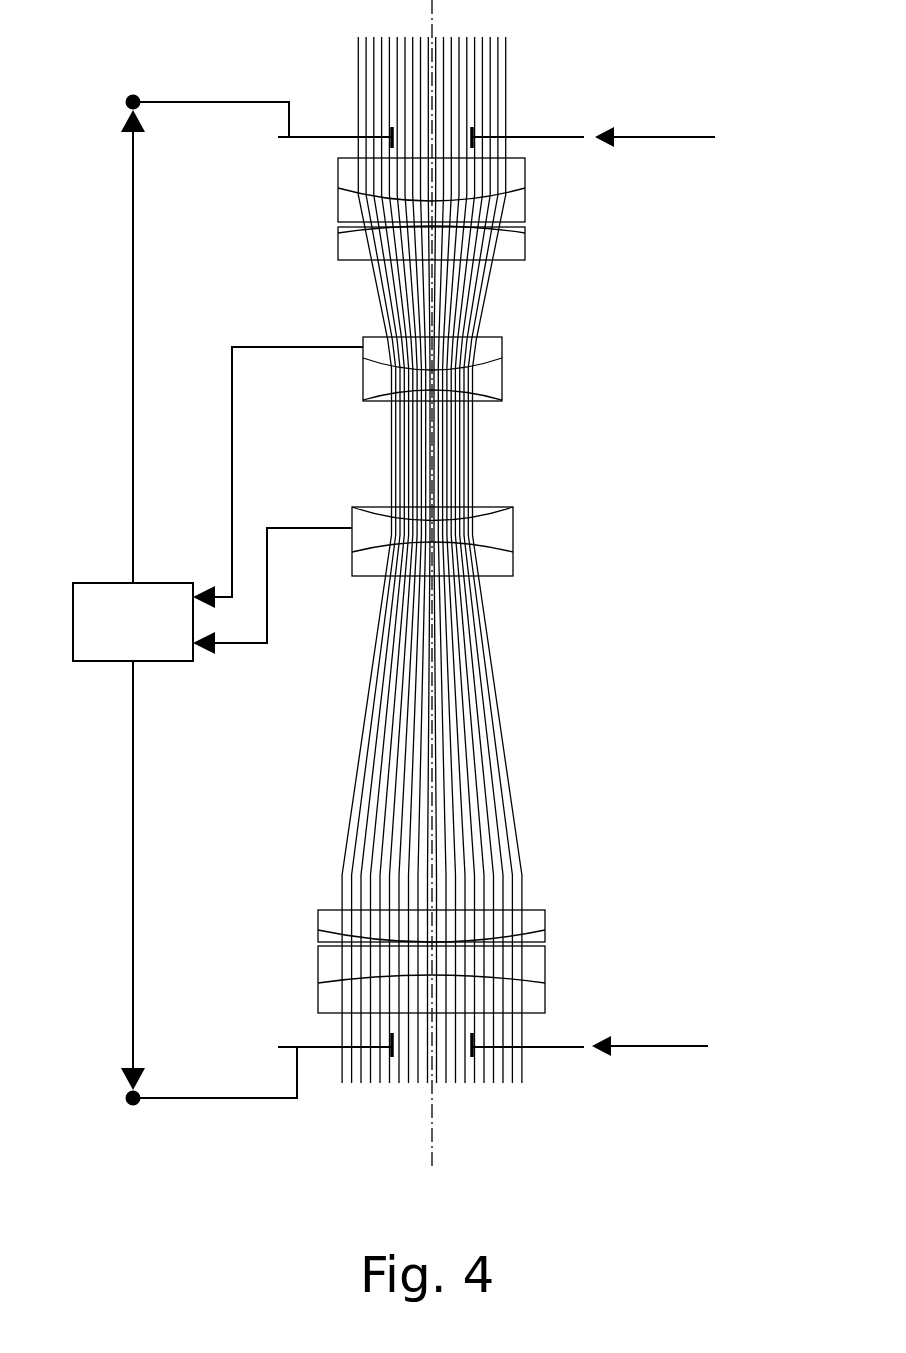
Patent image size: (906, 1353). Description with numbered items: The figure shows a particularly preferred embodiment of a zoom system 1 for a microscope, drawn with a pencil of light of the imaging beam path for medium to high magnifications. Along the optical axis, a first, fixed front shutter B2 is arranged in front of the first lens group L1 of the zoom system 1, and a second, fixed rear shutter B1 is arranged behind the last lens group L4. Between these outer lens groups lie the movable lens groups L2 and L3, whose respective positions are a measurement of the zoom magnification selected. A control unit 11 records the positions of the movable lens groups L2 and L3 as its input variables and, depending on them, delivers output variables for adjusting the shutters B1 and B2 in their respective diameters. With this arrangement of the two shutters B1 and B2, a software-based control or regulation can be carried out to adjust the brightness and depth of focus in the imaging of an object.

The zoom system 1 is at (703, 694).
The control unit 11 is at (133, 622).
The first lens group L1 is at (463, 973).
The movable lens group L2 is at (503, 523).
The movable lens group L3 is at (495, 382).
The last lens group L4 is at (517, 208).
The rear shutter B1 is at (655, 149).
The front shutter B2 is at (650, 1058).